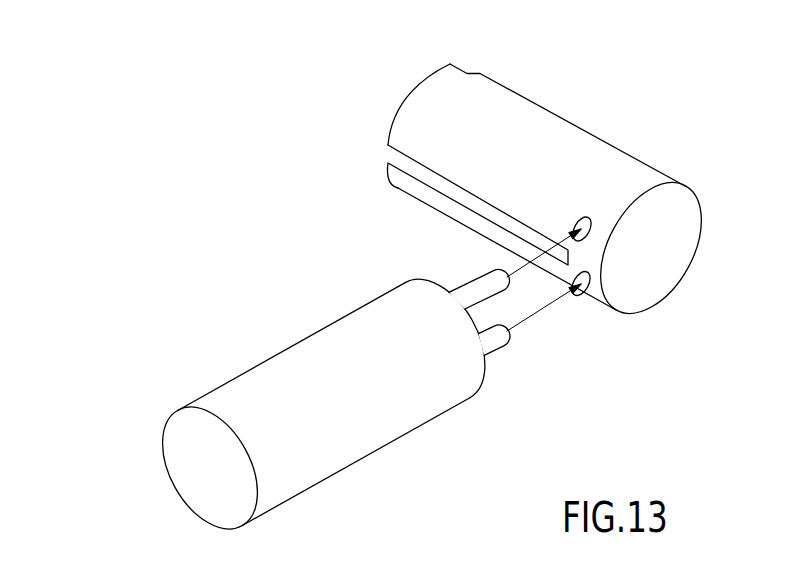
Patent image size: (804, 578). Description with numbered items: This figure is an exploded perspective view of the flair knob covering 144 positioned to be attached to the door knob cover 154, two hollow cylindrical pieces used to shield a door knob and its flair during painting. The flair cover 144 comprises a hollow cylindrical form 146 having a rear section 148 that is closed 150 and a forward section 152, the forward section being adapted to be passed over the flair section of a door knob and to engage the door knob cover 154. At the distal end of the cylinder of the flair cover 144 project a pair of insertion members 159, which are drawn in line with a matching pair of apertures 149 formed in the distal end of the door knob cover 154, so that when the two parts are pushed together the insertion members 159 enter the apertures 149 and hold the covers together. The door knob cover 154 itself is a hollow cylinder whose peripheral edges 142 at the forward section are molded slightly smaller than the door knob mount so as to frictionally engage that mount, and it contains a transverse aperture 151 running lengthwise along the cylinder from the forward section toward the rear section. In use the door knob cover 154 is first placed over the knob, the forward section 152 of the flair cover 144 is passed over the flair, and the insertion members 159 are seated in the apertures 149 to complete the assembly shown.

The peripheral edges 142 is at (458, 68).
The flair knob covering 144 is at (350, 487).
The hollow cylindrical form 146 is at (347, 390).
The rear section 148 is at (148, 431).
The apertures 149 is at (603, 184).
The closed end 150 is at (217, 485).
The transverse aperture 151 is at (413, 171).
The forward section 152 is at (493, 374).
The door knob cover 154 is at (410, 228).
The insertion members 159 is at (500, 341).